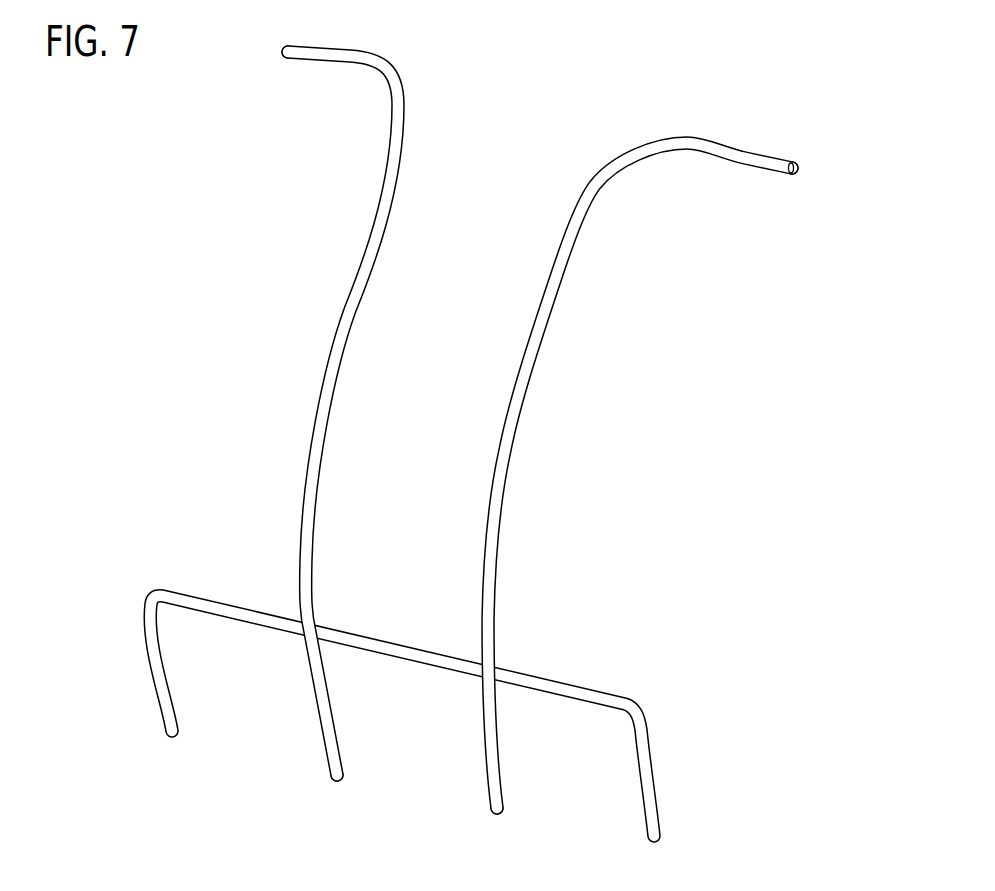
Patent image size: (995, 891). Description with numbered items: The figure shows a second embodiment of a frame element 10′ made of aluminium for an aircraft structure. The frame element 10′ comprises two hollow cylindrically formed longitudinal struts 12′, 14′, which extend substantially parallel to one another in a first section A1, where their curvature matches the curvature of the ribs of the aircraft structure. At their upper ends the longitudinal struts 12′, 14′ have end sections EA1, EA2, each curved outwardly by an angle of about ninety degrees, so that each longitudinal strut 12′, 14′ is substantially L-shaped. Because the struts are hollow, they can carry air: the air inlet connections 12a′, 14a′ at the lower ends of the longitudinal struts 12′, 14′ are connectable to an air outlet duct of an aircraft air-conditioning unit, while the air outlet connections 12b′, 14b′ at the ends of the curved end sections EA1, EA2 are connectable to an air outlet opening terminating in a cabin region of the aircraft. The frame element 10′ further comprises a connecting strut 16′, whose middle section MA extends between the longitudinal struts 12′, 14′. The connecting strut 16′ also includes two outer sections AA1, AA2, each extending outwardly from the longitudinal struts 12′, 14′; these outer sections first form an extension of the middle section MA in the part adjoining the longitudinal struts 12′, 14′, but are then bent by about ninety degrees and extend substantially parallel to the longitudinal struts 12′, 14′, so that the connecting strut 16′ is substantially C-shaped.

The frame element 10′ is at (760, 275).
The longitudinal strut 12′ is at (350, 297).
The air inlet connection 12a′ is at (339, 782).
The air outlet connection 12b′ is at (287, 52).
The longitudinal strut 14′ is at (522, 388).
The air inlet connection 14a′ is at (499, 814).
The air outlet connection 14b′ is at (794, 172).
The connecting strut 16′ is at (577, 692).
The end section EA1 is at (313, 85).
The end section EA2 is at (790, 120).
The first section A1 is at (555, 500).
The middle section MA is at (395, 615).
The outer section AA1 is at (123, 607).
The outer section AA2 is at (685, 725).